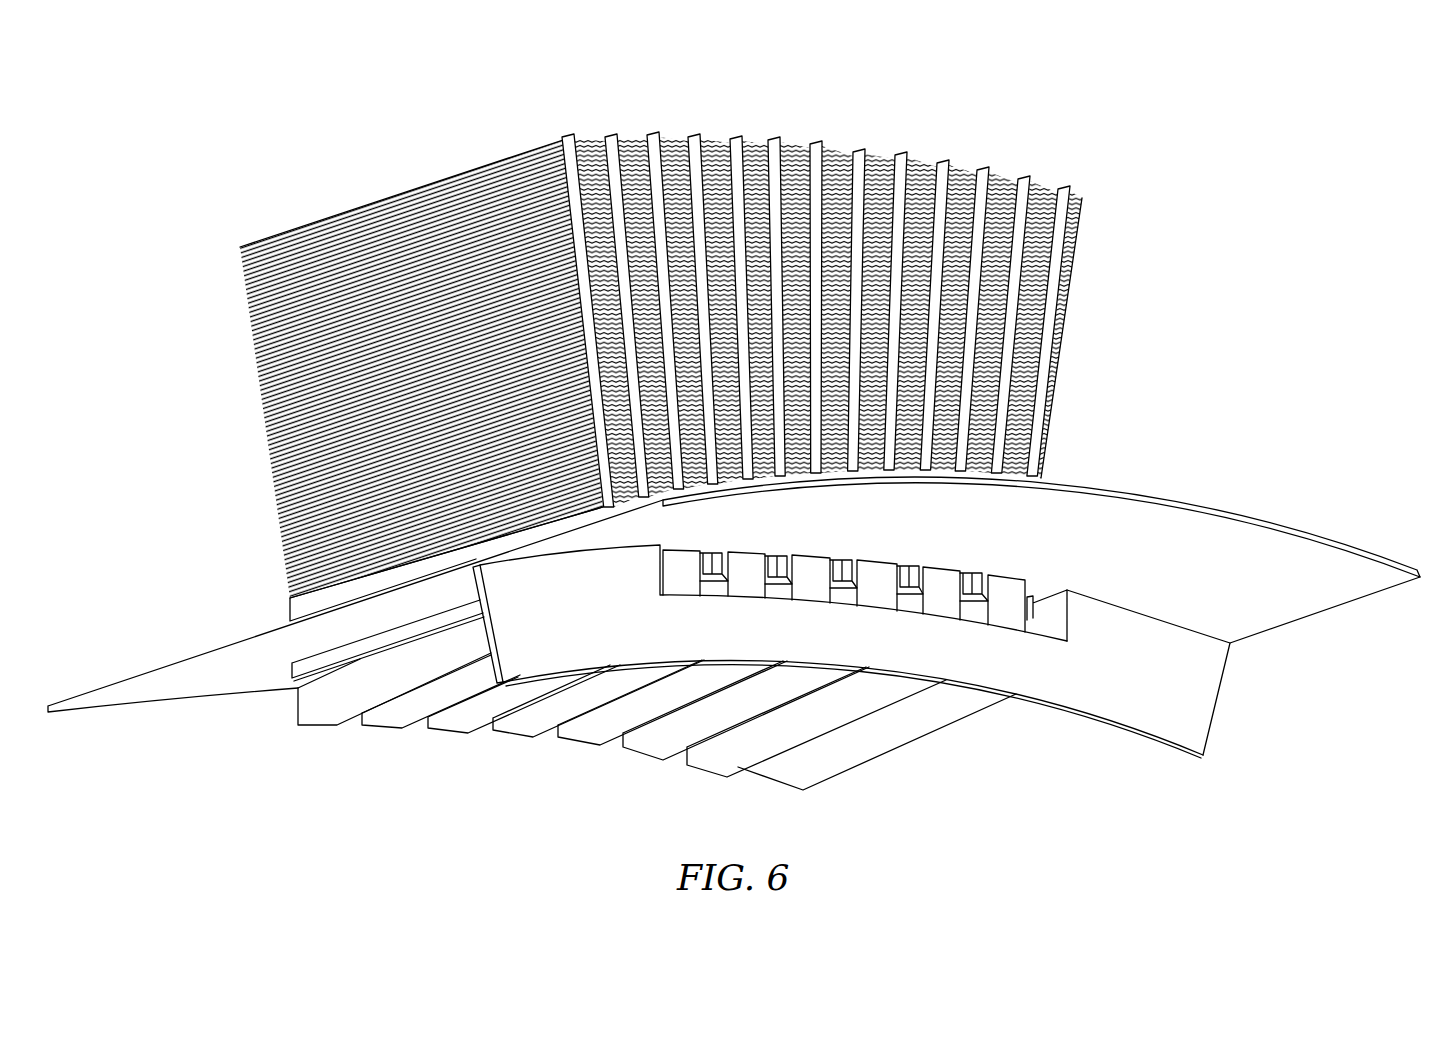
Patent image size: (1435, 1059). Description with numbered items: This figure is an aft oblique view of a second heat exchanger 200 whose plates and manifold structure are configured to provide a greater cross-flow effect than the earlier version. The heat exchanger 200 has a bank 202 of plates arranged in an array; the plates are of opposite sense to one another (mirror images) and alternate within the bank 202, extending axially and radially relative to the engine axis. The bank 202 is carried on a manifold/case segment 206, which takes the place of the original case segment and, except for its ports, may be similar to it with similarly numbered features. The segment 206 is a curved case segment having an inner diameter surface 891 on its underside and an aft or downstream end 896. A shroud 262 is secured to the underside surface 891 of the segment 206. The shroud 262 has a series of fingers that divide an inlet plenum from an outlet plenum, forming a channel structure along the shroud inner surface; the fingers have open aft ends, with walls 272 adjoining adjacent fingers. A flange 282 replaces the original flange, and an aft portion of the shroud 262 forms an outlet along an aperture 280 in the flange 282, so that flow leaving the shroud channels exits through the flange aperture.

The heat exchanger 200 is at (1165, 327).
The bank 202 is at (908, 126).
The manifold/case segment 206 is at (1184, 488).
The shroud 262 is at (625, 770).
The walls 272 is at (998, 607).
The aperture 280 is at (1060, 616).
The flange 282 is at (1148, 707).
The inner diameter surface 891 is at (1278, 590).
The aft end 896 is at (1340, 546).